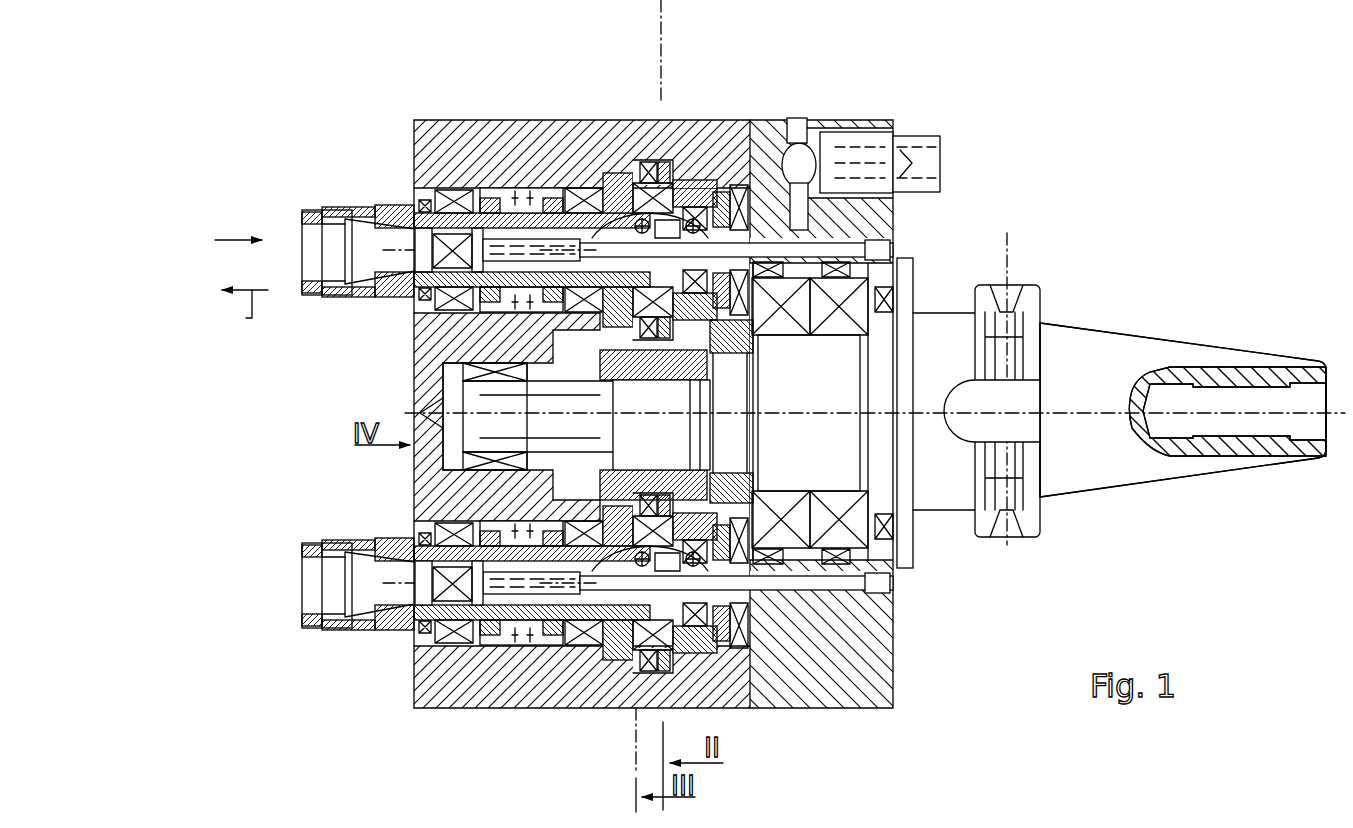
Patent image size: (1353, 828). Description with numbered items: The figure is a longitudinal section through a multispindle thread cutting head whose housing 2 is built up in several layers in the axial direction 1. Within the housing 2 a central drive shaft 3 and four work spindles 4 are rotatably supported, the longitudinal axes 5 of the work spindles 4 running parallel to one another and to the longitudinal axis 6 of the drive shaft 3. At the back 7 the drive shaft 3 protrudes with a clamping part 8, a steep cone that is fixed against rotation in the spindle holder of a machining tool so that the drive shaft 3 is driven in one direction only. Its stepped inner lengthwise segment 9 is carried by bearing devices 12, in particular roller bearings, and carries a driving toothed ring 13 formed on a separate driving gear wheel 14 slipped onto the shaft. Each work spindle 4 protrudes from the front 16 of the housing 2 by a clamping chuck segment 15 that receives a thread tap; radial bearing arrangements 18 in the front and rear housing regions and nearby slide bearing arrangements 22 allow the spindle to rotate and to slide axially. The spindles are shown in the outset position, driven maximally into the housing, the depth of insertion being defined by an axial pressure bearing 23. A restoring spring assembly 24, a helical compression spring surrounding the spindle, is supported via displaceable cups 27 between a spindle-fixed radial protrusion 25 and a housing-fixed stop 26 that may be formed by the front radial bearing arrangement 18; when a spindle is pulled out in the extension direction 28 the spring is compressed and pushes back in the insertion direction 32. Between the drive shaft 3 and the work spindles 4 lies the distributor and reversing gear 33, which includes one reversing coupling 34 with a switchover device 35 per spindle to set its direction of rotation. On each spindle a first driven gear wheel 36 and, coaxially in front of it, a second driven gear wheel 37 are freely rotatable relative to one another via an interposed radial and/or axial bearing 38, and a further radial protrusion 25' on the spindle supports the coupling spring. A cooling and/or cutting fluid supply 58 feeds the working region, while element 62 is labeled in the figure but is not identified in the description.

The axial direction 1 is at (1093, 400).
The housing 2 is at (850, 683).
The drive shaft 3 is at (937, 340).
The work spindle 4 is at (420, 320).
The longitudinal axis of the work spindle 5 is at (293, 252).
The longitudinal axis of the drive shaft 6 is at (1183, 410).
The back 7 is at (898, 240).
The clamping part 8 is at (1060, 360).
The inner lengthwise segment of the drive shaft 9 is at (720, 418).
The bearing device 12 is at (455, 366).
The driving toothed ring 13 is at (642, 477).
The driving gear wheel 14 is at (700, 482).
The clamping chuck segment 15 is at (381, 208).
The front 16 is at (412, 464).
The radial bearing arrangement 18 is at (459, 215).
The slide bearing arrangement 22 is at (470, 198).
The axial pressure bearing 23 is at (405, 212).
The restoring spring assembly 24 is at (525, 210).
The radial protrusion 25 is at (601, 110).
The radial protrusion 25' is at (655, 425).
The stop 26 is at (483, 225).
The displaceable cup 27 is at (513, 213).
The extension direction 28 is at (239, 311).
The insertion direction 32 is at (236, 220).
The distributor and reversing gear 33 is at (633, 352).
The reversing coupling 34 is at (637, 205).
The switchover device 35 is at (715, 230).
The first driven gear wheel 36 is at (665, 195).
The second driven gear wheel 37 is at (618, 190).
The radial and/or axial bearing 38 is at (673, 210).
The cooling and/or cutting fluid supply 58 is at (942, 160).
The channel 62 is at (782, 238).